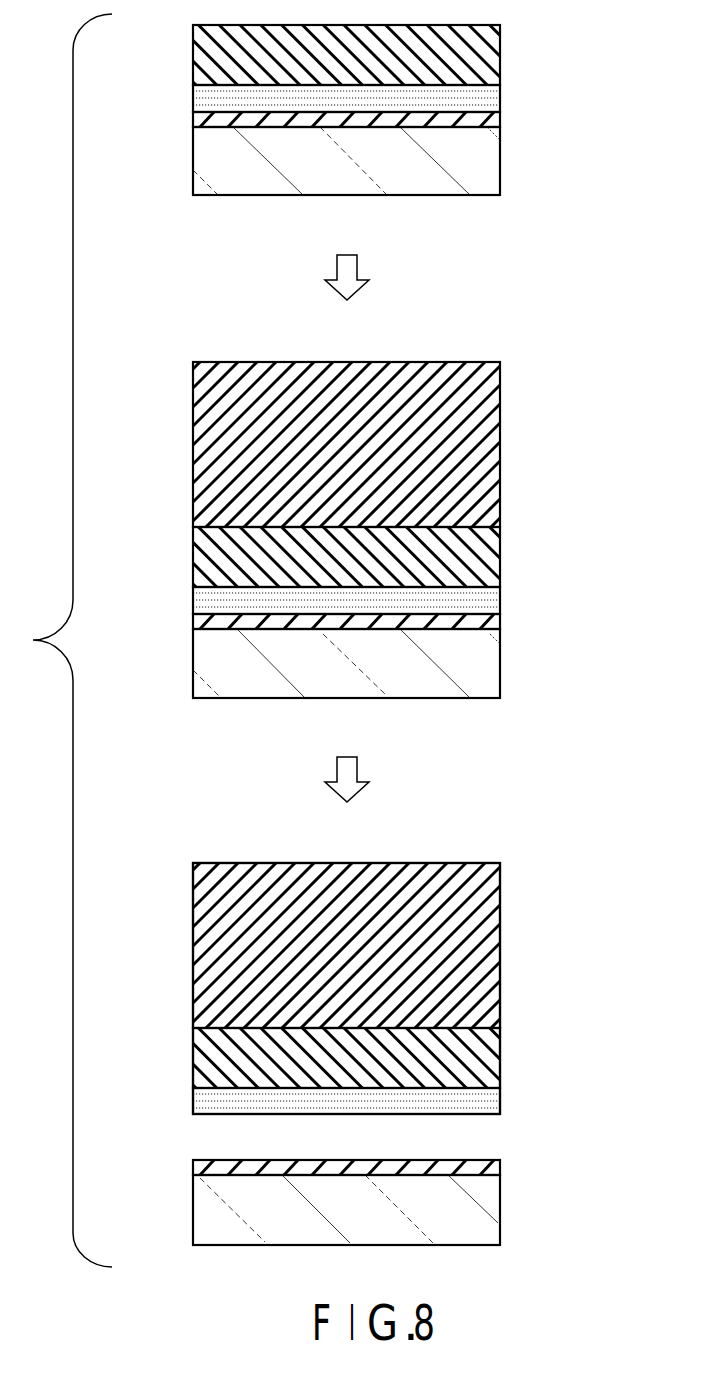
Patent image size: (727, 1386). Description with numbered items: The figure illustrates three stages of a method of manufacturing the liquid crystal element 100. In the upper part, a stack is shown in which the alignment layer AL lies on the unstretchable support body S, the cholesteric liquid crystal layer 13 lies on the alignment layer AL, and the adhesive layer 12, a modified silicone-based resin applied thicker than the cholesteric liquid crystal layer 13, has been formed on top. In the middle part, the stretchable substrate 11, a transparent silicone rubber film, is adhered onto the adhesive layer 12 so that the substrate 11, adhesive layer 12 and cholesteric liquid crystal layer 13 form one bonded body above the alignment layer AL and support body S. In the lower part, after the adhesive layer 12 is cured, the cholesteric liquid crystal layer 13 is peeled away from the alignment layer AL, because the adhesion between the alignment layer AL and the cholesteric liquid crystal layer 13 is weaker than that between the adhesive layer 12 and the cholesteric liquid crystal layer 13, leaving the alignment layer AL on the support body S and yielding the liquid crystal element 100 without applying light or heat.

The liquid crystal element 100 is at (505, 862).
The substrate 11 is at (500, 406).
The adhesive layer 12 is at (500, 51).
The cholesteric liquid crystal layer 13 is at (500, 87).
The alignment layer AL is at (500, 117).
The support body S is at (500, 159).